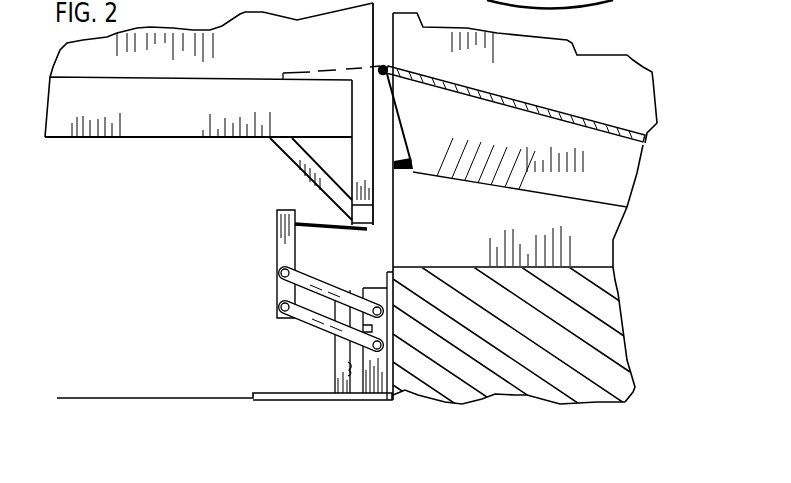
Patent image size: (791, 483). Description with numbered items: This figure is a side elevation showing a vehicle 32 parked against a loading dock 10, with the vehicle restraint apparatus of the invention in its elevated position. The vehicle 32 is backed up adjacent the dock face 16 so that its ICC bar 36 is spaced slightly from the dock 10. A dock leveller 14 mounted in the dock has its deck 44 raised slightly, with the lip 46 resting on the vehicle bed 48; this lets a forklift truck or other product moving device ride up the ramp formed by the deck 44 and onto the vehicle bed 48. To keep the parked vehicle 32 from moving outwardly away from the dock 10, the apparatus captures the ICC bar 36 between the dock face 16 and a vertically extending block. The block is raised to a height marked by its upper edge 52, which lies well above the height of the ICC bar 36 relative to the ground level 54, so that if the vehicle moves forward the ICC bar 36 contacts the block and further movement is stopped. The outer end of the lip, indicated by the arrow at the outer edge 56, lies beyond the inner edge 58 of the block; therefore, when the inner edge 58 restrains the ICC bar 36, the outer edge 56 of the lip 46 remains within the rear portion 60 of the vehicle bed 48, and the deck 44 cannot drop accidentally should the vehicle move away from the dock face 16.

The dock 10 is at (400, 157).
The dock leveller 14 is at (571, 141).
The dock face 16 is at (390, 251).
The vehicle 32 is at (166, 66).
The ICC bar 36 is at (367, 215).
The deck 44 is at (514, 95).
The lip 46 is at (325, 68).
The vehicle bed 48 is at (267, 78).
The upper edge 52 is at (277, 212).
The ground level 54 is at (184, 392).
The outer edge of the lip 56 is at (285, 84).
The inner edge 58 is at (296, 256).
The rear portion 60 is at (367, 91).